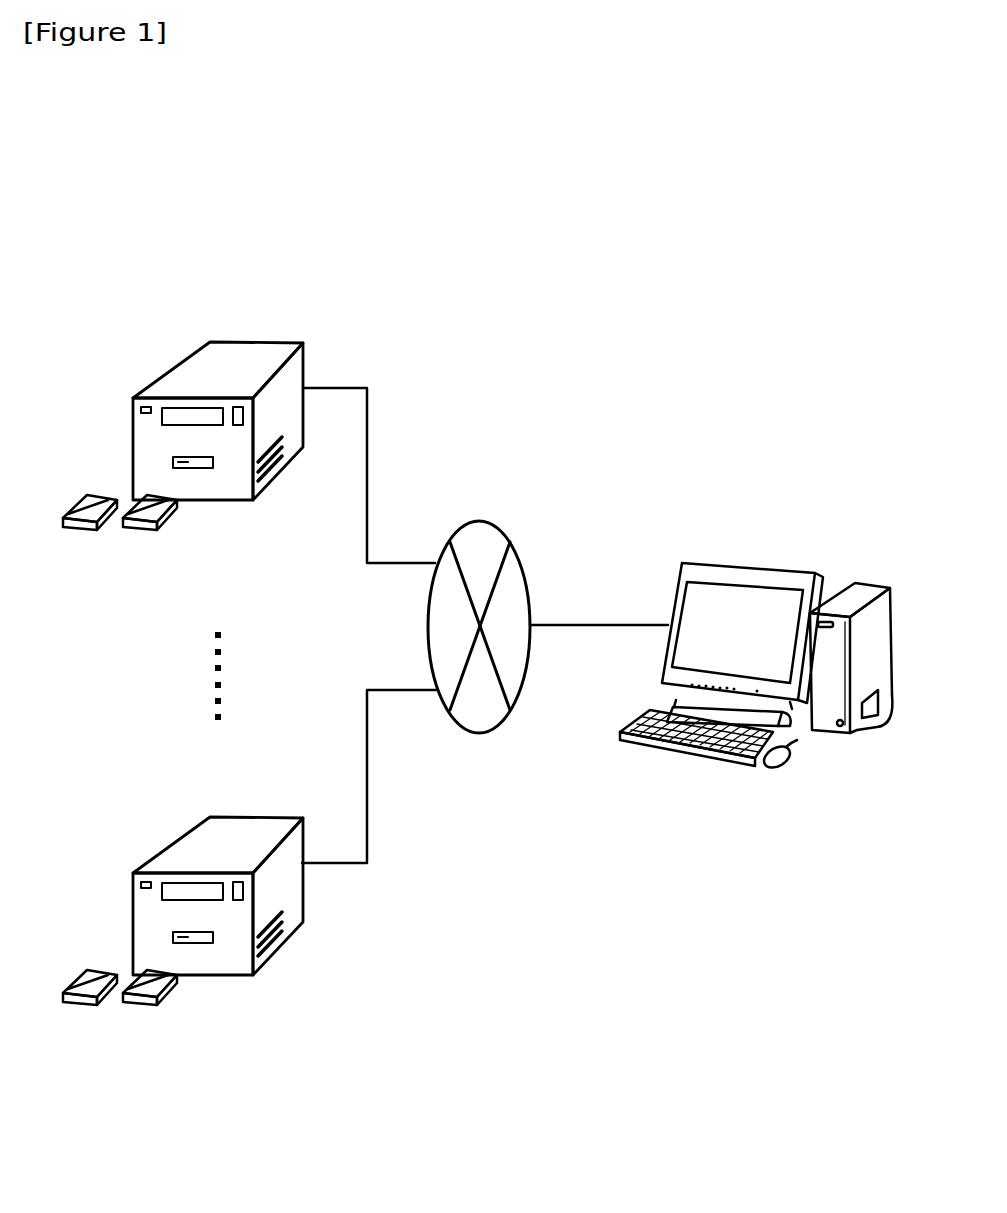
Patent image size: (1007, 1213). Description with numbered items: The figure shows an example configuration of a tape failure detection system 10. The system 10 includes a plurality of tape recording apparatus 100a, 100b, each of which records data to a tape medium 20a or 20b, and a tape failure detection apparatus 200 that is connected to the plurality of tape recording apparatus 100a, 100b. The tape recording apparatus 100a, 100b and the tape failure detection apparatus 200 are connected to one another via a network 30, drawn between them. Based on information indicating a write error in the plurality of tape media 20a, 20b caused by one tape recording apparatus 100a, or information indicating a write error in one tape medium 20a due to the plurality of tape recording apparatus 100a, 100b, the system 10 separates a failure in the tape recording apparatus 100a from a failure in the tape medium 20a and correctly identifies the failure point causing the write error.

The tape failure detection system 10 is at (747, 222).
The tape recording apparatus 100a is at (257, 342).
The tape recording apparatus 100b is at (256, 818).
The tape medium 20a is at (80, 532).
The tape medium 20b is at (140, 532).
The network 30 is at (480, 522).
The tape failure detection apparatus 200 is at (755, 567).